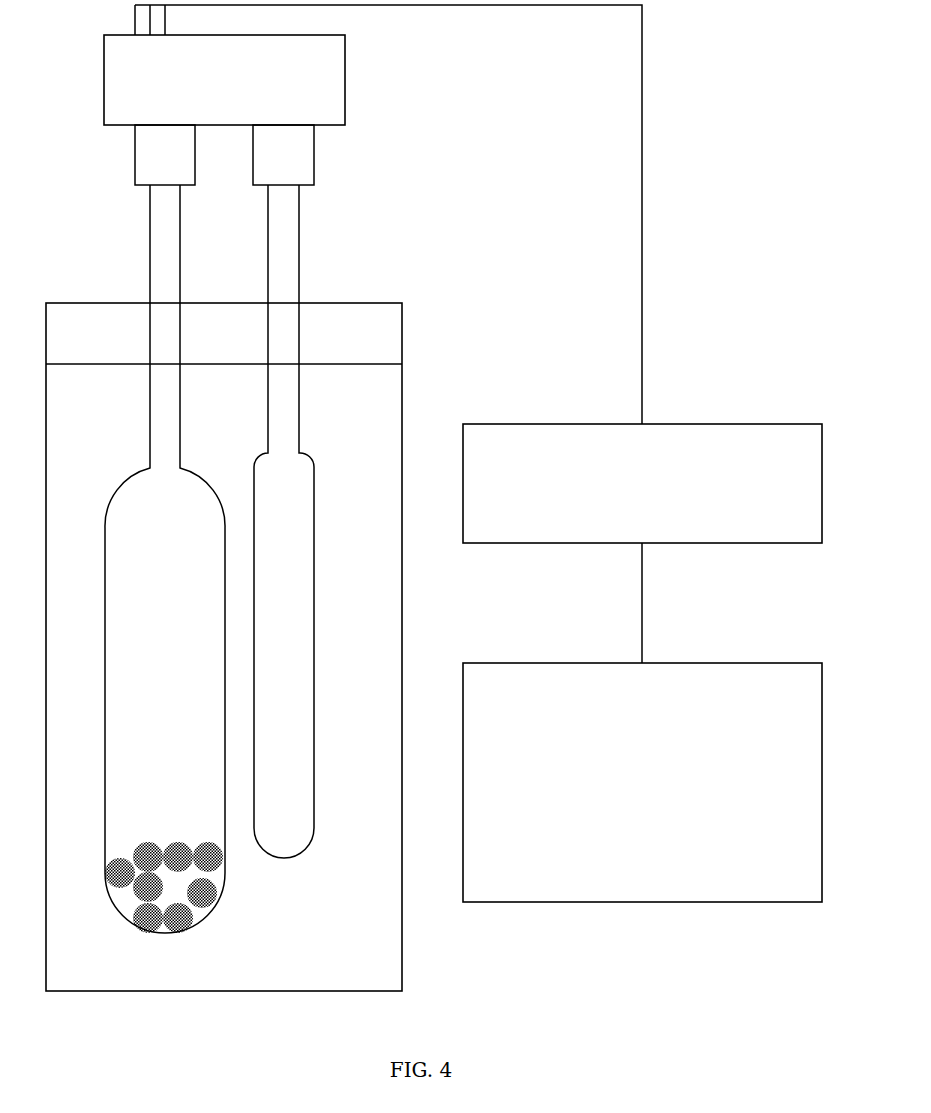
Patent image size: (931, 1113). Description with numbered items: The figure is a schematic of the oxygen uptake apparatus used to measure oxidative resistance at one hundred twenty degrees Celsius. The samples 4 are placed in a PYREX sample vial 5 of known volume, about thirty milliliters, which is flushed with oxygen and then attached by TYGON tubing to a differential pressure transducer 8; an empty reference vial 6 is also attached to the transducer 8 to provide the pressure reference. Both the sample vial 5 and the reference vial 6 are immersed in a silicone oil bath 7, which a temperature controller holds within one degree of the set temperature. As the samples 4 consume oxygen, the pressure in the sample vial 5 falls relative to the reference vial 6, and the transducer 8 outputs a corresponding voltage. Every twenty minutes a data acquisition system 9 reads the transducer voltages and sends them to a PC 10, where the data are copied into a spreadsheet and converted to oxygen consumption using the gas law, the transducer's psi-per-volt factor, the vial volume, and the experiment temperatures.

The samples 4 is at (164, 887).
The sample vial 5 is at (165, 559).
The reference vial 6 is at (284, 521).
The silicone oil bath 7 is at (224, 647).
The differential pressure transducer 8 is at (224, 110).
The data acquisition system 9 is at (642, 483).
The PC 10 is at (642, 782).